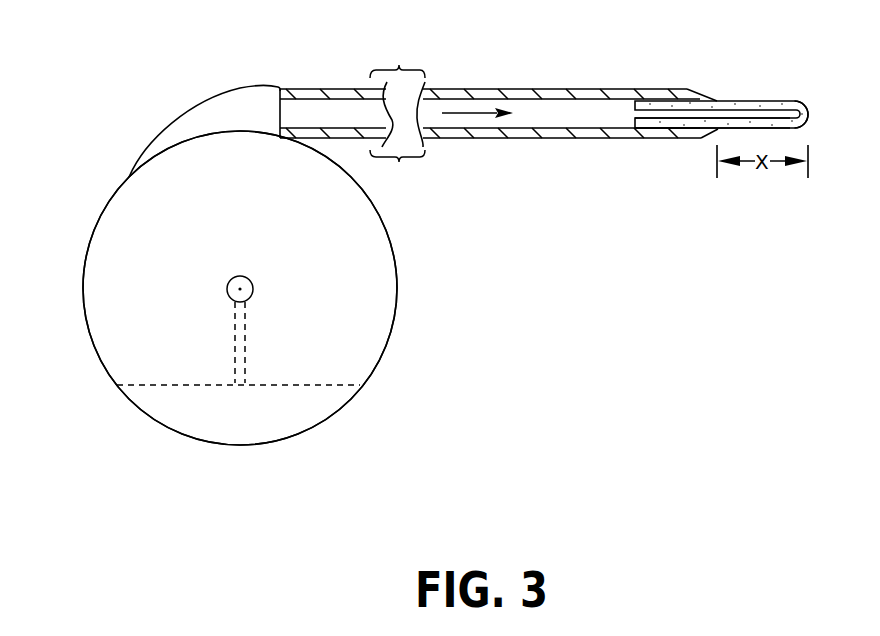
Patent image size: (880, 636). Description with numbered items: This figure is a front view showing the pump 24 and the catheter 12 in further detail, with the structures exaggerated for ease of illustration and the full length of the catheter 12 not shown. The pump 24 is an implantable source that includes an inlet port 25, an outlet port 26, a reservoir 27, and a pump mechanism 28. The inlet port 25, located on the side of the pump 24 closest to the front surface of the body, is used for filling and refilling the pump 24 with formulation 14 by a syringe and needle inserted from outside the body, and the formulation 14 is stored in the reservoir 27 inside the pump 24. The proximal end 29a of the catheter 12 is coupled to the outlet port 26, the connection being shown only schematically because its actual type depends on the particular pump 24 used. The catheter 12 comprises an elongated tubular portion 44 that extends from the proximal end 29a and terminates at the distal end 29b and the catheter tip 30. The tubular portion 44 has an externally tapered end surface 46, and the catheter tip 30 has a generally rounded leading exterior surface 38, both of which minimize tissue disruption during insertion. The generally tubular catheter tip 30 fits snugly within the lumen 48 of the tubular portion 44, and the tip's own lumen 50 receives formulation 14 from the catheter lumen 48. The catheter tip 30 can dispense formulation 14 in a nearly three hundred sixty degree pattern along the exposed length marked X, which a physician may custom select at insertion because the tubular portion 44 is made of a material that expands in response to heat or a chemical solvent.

The catheter 12 is at (507, 97).
The formulation 14 is at (454, 112).
The pump 24 is at (309, 356).
The inlet port 25 is at (241, 289).
The outlet port 26 is at (256, 124).
The reservoir 27 is at (299, 408).
The pump mechanism 28 is at (130, 333).
The proximal end 29a is at (307, 93).
The distal end 29b is at (693, 93).
The catheter tip 30 is at (767, 102).
The rounded leading exterior surface 38 is at (809, 119).
The elongated tubular portion 44 is at (567, 98).
The externally tapered end surface 46 is at (712, 100).
The lumen 48 is at (612, 118).
The lumen 50 is at (662, 120).